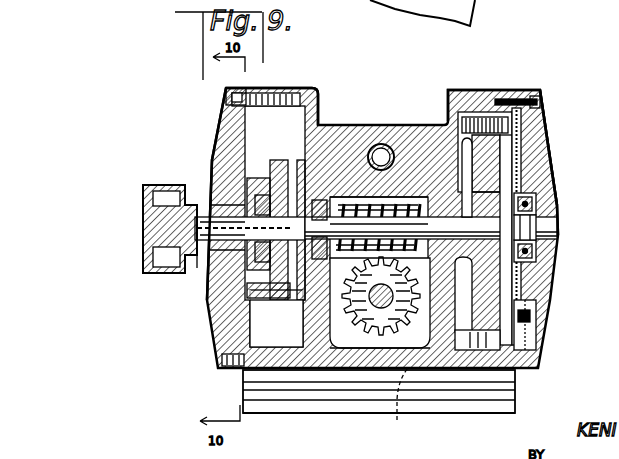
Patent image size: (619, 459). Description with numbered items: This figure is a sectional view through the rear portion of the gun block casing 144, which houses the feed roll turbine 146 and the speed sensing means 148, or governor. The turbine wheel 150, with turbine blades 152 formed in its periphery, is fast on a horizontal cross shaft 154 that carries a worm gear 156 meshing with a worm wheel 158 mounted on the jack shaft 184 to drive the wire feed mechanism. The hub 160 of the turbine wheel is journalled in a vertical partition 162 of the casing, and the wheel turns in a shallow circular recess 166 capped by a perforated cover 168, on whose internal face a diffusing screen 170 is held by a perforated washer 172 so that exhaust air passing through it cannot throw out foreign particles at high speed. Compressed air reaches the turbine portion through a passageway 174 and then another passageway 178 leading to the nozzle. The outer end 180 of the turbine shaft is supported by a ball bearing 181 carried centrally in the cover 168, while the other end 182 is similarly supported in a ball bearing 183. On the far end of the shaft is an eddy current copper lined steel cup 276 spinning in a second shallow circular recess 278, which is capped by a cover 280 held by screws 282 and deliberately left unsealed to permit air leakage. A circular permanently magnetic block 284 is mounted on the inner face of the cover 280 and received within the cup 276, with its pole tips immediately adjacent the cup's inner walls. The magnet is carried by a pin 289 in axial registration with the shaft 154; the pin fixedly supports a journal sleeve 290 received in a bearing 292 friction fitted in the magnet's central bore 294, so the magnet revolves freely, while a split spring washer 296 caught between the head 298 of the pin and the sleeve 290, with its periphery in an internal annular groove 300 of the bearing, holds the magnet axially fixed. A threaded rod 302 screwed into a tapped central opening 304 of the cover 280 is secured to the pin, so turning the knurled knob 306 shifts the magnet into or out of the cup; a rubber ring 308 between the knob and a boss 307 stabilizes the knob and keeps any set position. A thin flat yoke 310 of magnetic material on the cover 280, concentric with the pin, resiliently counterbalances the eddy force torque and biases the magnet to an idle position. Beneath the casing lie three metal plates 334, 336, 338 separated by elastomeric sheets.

The casing 144 is at (400, 122).
The turbine 146 is at (512, 72).
The speed sensing means 148 is at (317, 86).
The turbine wheel 150 is at (522, 125).
The turbine blades 152 is at (518, 100).
The cross shaft 154 is at (530, 185).
The worm gear 156 is at (392, 196).
The worm wheel 158 is at (371, 355).
The hub 160 is at (428, 202).
The vertical partition 162 is at (471, 293).
The shallow circular recess 166 is at (460, 130).
The perforated cover 168 is at (536, 200).
The diffusing screen 170 is at (528, 140).
The perforated washer 172 is at (536, 305).
The passageway 174 is at (398, 404).
The passageway 178 is at (477, 346).
The outer end of turbine shaft 180 is at (545, 220).
The ball bearing 181 is at (540, 250).
The other end of turbine shaft 182 is at (352, 258).
The ball bearing 183 is at (395, 197).
The jack shaft 184 is at (338, 345).
The eddy current cup 276 is at (285, 160).
The shallow circular recess 278 is at (273, 100).
The cover 280 is at (220, 136).
The screws 282 is at (238, 100).
The circular block 284 is at (250, 180).
The pin 289 is at (198, 266).
The journal sleeve 290 is at (258, 256).
The bearing 292 is at (220, 320).
The central bore 294 is at (255, 200).
The split spring washer 296 is at (356, 178).
The head of the pin 298 is at (356, 192).
The internal annular groove 300 is at (367, 153).
The threaded rod 302 is at (145, 233).
The tapped central opening 304 is at (145, 206).
The knurled knob 306 is at (150, 268).
The boss 307 is at (212, 170).
The rubber ring 308 is at (185, 195).
The yoke 310 is at (252, 318).
The metal plate 334 is at (246, 376).
The metal plate 336 is at (246, 392).
The metal plate 338 is at (246, 405).